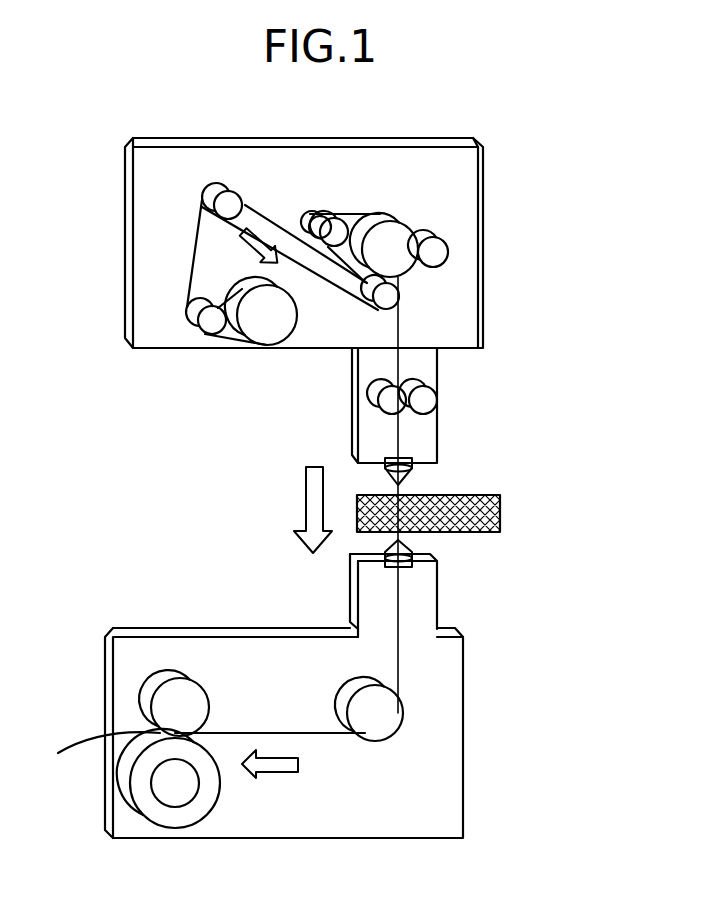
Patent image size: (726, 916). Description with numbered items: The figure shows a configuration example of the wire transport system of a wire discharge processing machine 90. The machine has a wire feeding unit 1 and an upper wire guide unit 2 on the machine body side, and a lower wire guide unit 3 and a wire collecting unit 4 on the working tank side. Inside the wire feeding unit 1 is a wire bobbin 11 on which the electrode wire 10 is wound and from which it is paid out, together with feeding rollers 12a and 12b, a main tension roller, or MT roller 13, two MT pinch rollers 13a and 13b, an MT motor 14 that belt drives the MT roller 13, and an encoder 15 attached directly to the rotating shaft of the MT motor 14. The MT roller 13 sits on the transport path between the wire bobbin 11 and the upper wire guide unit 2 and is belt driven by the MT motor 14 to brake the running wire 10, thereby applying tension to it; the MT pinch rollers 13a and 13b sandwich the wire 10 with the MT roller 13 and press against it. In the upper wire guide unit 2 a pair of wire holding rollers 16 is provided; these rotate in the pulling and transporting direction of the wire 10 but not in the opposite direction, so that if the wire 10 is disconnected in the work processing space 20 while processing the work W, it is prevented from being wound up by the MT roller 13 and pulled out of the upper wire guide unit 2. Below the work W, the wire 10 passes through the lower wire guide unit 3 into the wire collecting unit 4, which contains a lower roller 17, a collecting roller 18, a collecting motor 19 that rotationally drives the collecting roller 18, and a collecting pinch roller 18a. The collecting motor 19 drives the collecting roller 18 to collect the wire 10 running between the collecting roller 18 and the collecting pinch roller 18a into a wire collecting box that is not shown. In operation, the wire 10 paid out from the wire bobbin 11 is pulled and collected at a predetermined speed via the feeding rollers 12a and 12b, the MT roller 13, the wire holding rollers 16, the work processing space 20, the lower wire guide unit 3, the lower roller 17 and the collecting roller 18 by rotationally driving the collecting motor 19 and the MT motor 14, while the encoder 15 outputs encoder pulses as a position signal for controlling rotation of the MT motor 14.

The wire discharge processing machine 90 is at (576, 175).
The wire feeding unit 1 is at (128, 228).
The upper wire guide unit 2 is at (352, 441).
The lower wire guide unit 3 is at (437, 597).
The wire collecting unit 4 is at (440, 822).
The electrode wire 10 is at (335, 287).
The wire bobbin 11 is at (268, 337).
The feeding roller 12a is at (215, 321).
The feeding roller 12b is at (228, 207).
The main tension roller (MT roller) 13 is at (390, 240).
The MT pinch roller 13a is at (433, 252).
The MT pinch roller 13b is at (387, 297).
The MT motor 14 is at (340, 232).
The encoder 15 is at (313, 218).
The wire holding rollers 16 is at (384, 394).
The lower roller 17 is at (377, 712).
The collecting roller 18 is at (140, 795).
The collecting pinch roller 18a is at (181, 705).
The collecting motor 19 is at (172, 793).
The work processing space 20 is at (418, 488).
The work W is at (500, 513).